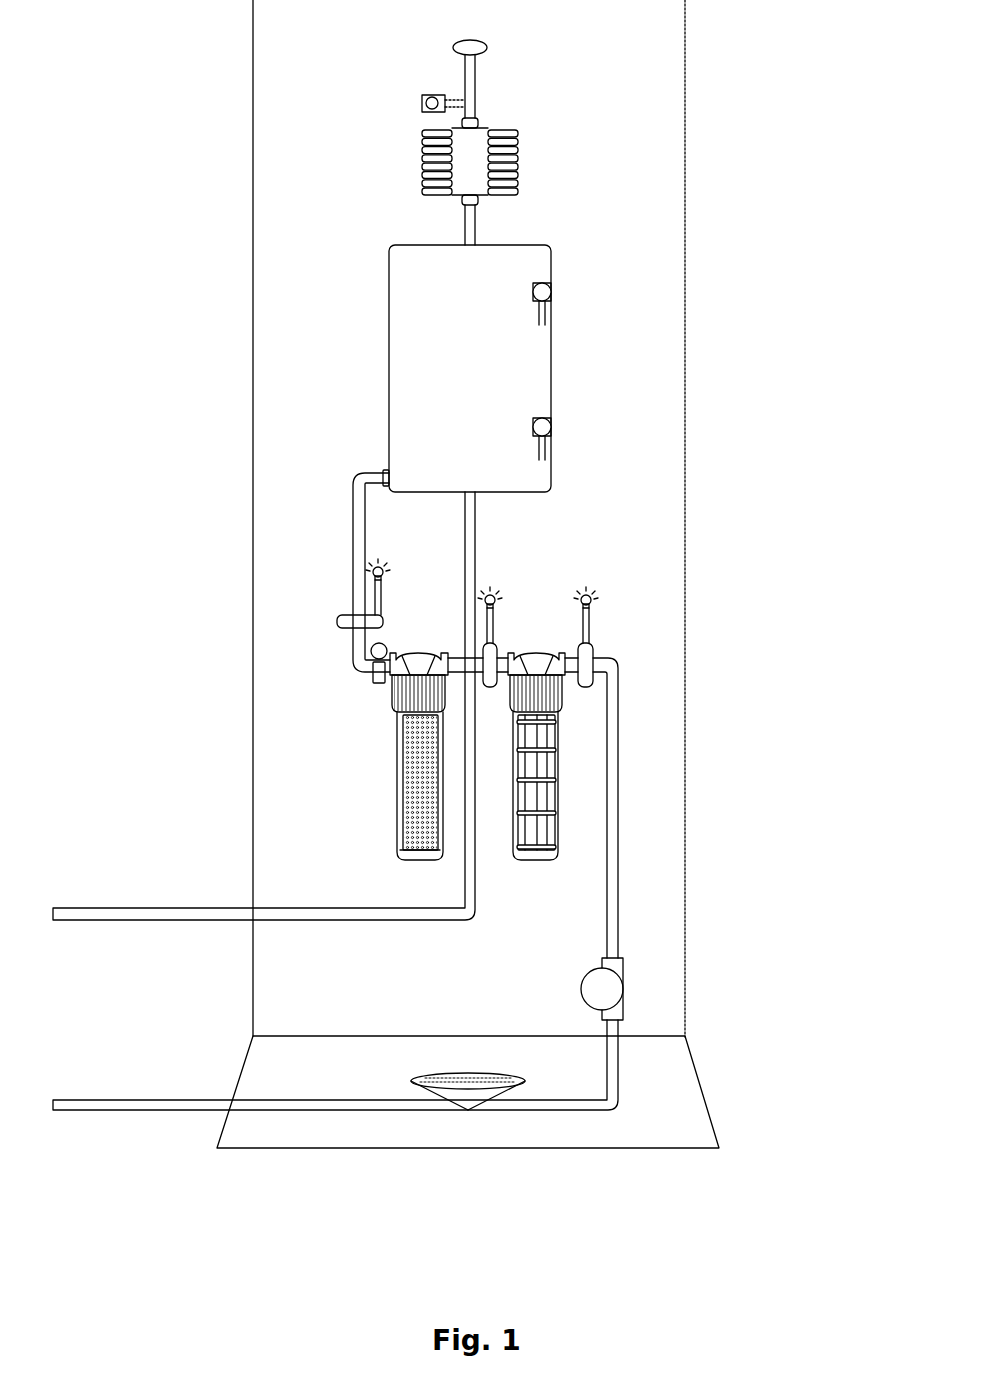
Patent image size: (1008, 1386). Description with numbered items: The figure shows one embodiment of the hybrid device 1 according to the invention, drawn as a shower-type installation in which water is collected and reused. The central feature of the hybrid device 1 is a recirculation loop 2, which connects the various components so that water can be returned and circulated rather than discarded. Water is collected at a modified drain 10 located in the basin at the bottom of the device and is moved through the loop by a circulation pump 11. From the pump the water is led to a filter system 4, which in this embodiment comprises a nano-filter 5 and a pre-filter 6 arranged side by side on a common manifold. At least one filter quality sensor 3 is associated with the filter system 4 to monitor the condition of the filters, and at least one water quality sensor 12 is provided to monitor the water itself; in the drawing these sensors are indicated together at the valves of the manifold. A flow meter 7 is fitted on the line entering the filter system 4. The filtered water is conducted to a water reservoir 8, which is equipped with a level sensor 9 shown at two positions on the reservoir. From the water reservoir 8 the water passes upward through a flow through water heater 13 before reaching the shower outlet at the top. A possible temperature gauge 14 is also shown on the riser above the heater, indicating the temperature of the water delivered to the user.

The hybrid device 1 is at (700, 393).
The recirculation loop 2 is at (706, 1047).
The filter quality sensor 3 is at (496, 599).
The filter system 4 is at (378, 700).
The nano-filter 5 is at (418, 813).
The pre-filter 6 is at (537, 769).
The flow meter 7 is at (371, 650).
The water reservoir 8 is at (496, 358).
The level sensor 9 is at (551, 292).
The modified drain 10 is at (468, 1094).
The circulation pump 11 is at (602, 989).
The water quality sensor 12 is at (372, 572).
The flow through water heater 13 is at (472, 155).
The temperature gauge 14 is at (422, 103).